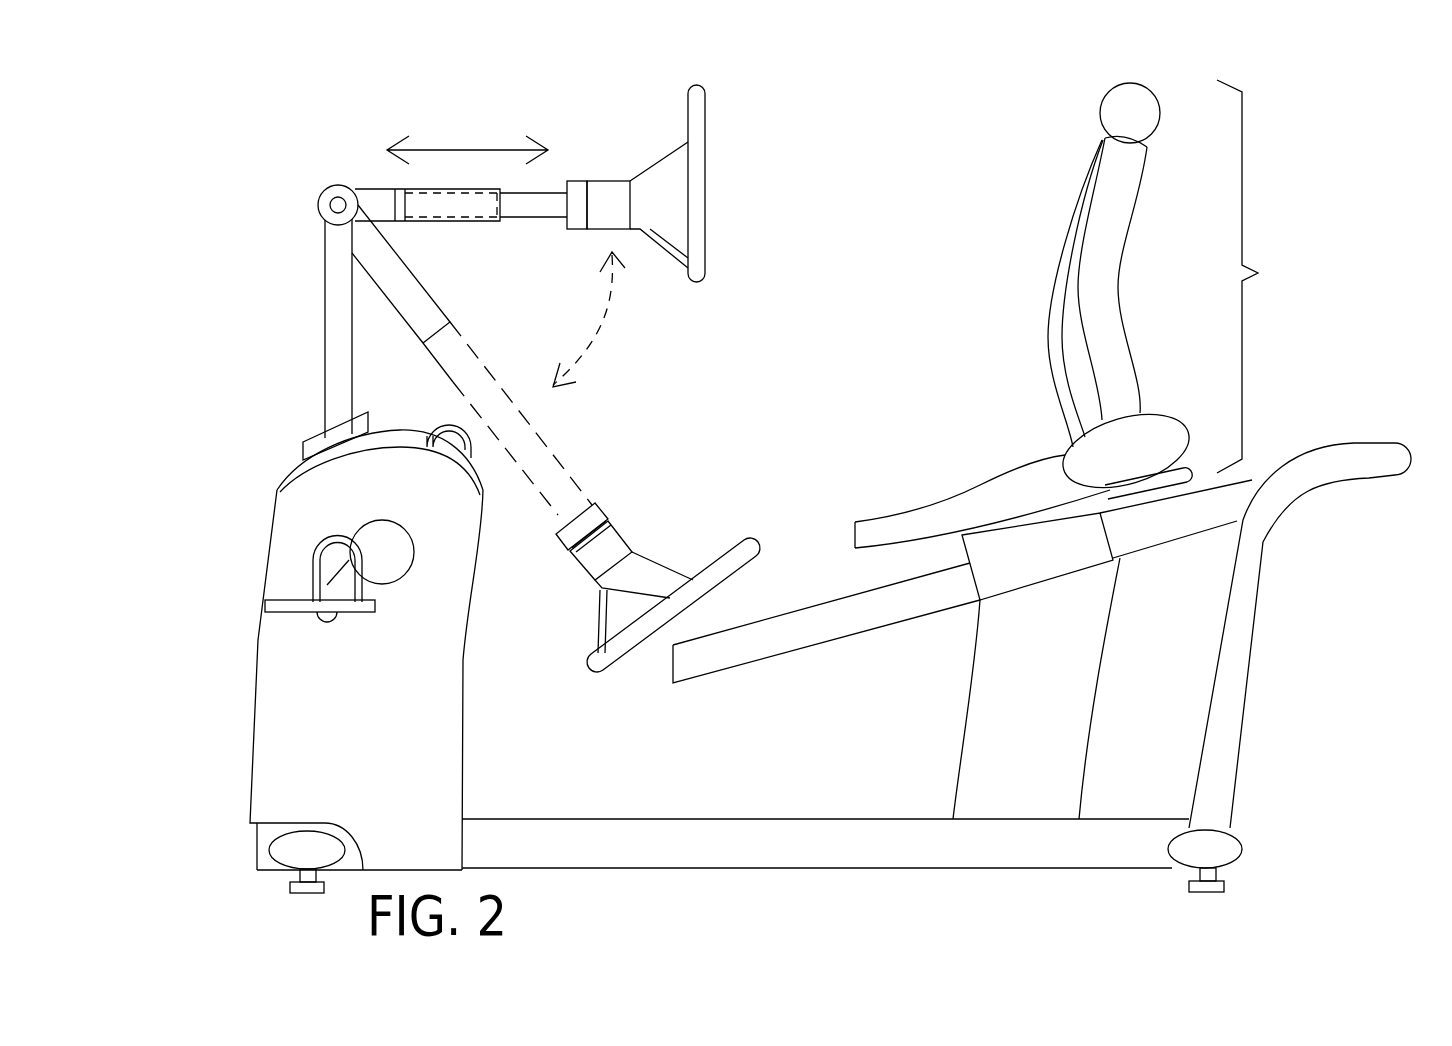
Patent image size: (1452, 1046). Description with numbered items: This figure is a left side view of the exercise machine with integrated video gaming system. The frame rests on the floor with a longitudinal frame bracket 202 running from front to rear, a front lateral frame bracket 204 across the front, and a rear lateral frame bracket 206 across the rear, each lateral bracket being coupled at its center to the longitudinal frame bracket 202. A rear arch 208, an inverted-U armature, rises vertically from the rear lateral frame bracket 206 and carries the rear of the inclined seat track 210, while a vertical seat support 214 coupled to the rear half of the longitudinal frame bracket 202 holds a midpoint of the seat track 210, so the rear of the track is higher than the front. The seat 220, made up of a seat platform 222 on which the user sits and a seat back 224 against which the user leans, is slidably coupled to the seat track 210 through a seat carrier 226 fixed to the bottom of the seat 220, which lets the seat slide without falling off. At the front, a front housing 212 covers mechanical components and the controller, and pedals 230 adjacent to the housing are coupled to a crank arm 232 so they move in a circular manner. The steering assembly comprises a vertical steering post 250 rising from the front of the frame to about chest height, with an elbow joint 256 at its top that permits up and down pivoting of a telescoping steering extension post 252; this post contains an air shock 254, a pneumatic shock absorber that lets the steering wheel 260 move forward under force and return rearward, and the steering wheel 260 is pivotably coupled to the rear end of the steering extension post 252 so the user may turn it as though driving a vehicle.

The longitudinal frame bracket 202 is at (652, 857).
The front lateral frame bracket 204 is at (278, 848).
The rear lateral frame bracket 206 is at (1230, 851).
The rear arch 208 is at (1235, 678).
The seat track 210 is at (722, 653).
The front housing 212 is at (292, 727).
The seat support 214 is at (1073, 665).
The seat 220 is at (1210, 276).
The seat platform 222 is at (962, 510).
The seat back 224 is at (1092, 283).
The seat carrier 226 is at (993, 575).
The pedals 230 is at (308, 607).
The crank arm 232 is at (398, 537).
The vertical steering post 250 is at (332, 324).
The steering extension post 252 is at (453, 222).
The air shock 254 is at (448, 207).
The elbow joint 256 is at (336, 204).
The steering wheel 260 is at (693, 127).